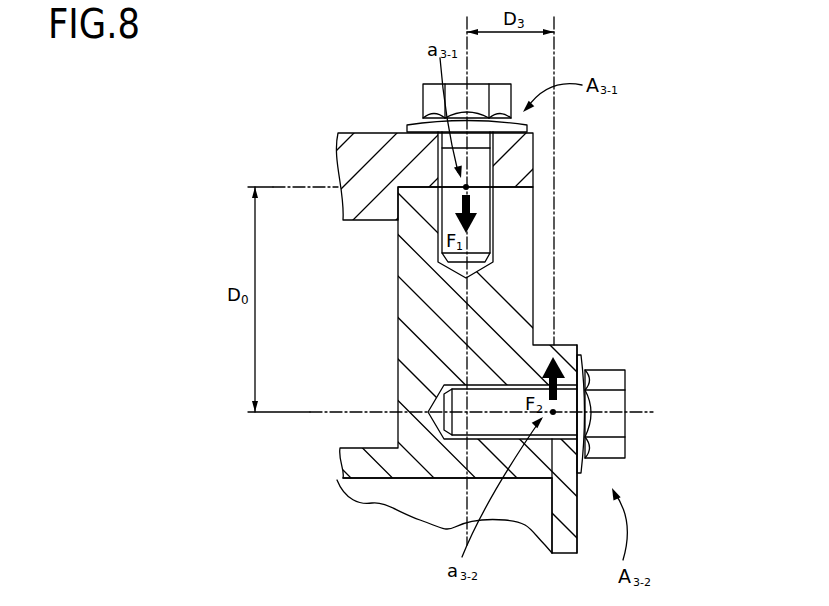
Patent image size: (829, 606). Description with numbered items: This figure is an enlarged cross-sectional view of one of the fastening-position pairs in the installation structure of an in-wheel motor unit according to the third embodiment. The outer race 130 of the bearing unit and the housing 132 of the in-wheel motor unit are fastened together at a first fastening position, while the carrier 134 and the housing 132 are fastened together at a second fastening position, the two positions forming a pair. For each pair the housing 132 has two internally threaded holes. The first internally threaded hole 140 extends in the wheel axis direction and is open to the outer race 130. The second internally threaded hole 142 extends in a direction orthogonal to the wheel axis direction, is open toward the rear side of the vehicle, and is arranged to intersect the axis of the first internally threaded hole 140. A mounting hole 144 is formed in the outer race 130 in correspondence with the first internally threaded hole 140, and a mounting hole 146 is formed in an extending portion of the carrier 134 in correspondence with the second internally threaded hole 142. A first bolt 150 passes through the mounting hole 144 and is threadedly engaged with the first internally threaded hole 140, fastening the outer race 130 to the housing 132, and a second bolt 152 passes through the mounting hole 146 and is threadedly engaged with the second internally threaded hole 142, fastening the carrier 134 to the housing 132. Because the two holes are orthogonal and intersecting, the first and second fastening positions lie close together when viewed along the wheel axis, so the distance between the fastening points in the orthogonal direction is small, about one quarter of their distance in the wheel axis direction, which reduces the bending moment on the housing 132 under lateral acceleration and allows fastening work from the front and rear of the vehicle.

The outer race 130 is at (362, 143).
The housing 132 is at (513, 289).
The carrier 134 is at (388, 494).
The first internally threaded hole 140 is at (489, 210).
The second internally threaded hole 142 is at (505, 397).
The mounting hole 144 is at (489, 163).
The mounting hole 146 is at (565, 437).
The first bolt 150 is at (475, 92).
The second bolt 152 is at (615, 441).